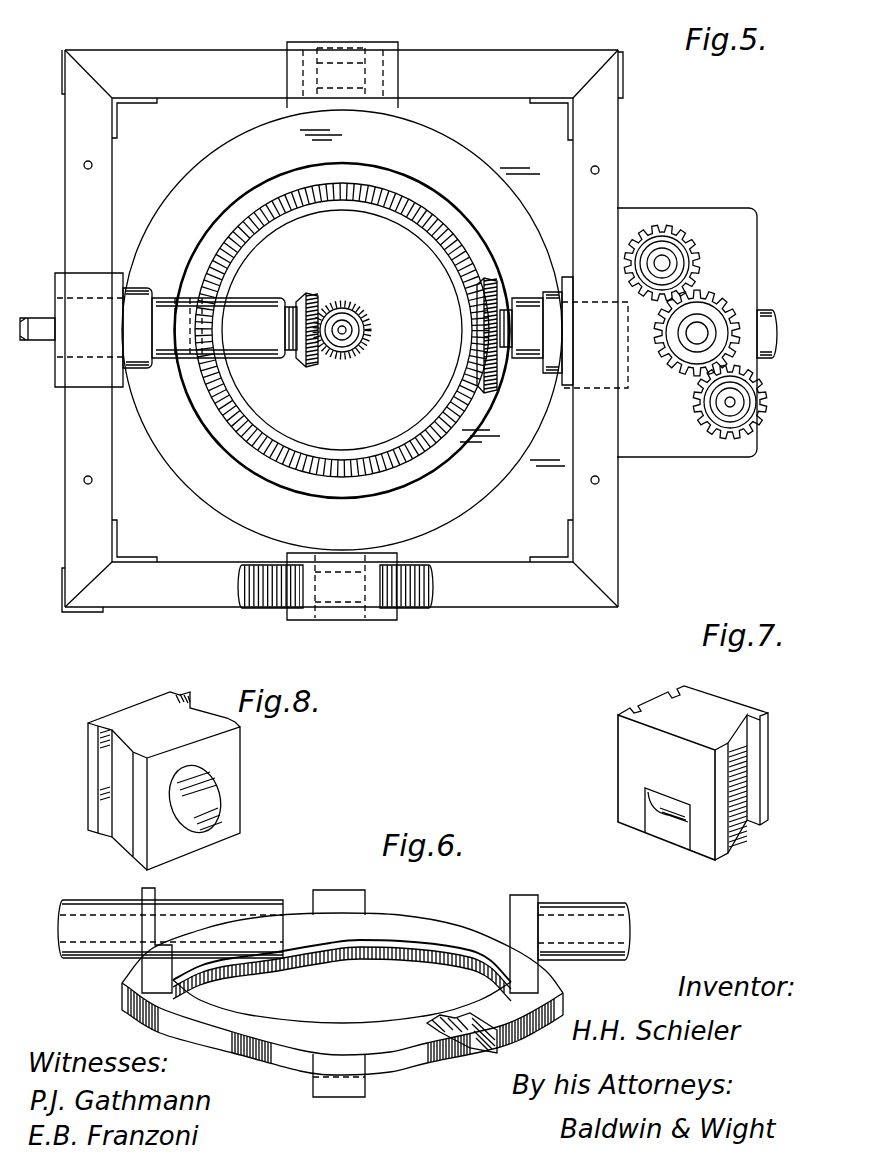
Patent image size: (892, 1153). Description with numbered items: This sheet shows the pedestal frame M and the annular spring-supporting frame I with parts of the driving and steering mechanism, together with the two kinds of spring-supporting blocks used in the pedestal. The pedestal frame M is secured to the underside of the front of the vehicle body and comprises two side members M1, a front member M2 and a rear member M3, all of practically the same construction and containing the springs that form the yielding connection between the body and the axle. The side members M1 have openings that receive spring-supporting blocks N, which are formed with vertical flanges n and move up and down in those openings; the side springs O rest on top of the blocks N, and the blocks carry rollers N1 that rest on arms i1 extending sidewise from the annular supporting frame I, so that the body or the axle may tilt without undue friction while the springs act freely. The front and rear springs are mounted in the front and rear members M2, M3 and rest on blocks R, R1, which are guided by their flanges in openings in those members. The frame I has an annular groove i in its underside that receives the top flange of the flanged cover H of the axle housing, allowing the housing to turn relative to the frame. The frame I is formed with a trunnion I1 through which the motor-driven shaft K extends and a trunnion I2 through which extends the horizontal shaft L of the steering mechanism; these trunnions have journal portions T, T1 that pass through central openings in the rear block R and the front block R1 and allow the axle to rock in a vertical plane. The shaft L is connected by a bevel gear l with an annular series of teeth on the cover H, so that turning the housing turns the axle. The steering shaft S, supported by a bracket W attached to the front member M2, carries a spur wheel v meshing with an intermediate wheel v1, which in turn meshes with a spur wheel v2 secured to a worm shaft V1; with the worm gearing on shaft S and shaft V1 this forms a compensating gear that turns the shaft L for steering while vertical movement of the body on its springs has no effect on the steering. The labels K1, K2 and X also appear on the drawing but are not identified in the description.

In FIG. 5, the pedestal frame M is at (341, 328).
In FIG. 5, the side members of the pedestal frame M1 is at (480, 601).
In FIG. 5, the front member of the pedestal frame M2 is at (595, 328).
In FIG. 5, the rear member of the pedestal frame M3 is at (88, 328).
In FIG. 5, the annular supporting frame I is at (240, 503).
In FIG. 6, the annular supporting frame I is at (432, 928).
In FIG. 5, the arms i1 is at (388, 206).
In FIG. 6, the arms i1 is at (322, 905).
In FIG. 5, the flanged cover H is at (342, 330).
In FIG. 5, the motor-driven shaft K is at (40, 320).
In FIG. 5, the bevel gear on shaft K1 is at (322, 278).
In FIG. 5, the central pinion K2 is at (352, 322).
In FIG. 5, the center axis X is at (352, 360).
In FIG. 5, the bevel gear l is at (476, 320).
In FIG. 5, the trunnion I1 is at (224, 328).
In FIG. 6, the trunnion I1 is at (205, 905).
In FIG. 5, the trunnion I2 is at (533, 358).
In FIG. 6, the trunnion I2 is at (514, 895).
In FIG. 5, the rear journal T is at (84, 298).
In FIG. 6, the rear journal T is at (72, 902).
In FIG. 5, the front journal T1 is at (592, 302).
In FIG. 6, the front journal T1 is at (622, 937).
In FIG. 5, the rear block R is at (567, 390).
In FIG. 8, the rear block R is at (122, 703).
In FIG. 5, the front block R1 is at (58, 384).
In FIG. 5, the bracket W is at (730, 244).
In FIG. 5, the steering shaft S is at (661, 255).
In FIG. 5, the spur wheel v is at (678, 236).
In FIG. 5, the intermediate wheel v1 is at (703, 310).
In FIG. 5, the spur wheel v2 is at (700, 414).
In FIG. 5, the worm shaft V1 is at (729, 406).
In FIG. 5, the horizontal shaft of the steering mechanism L is at (776, 336).
In FIG. 5, the spring-supporting block N is at (330, 31).
In FIG. 7, the spring-supporting block N is at (660, 684).
In FIG. 5, the rollers N1 is at (372, 622).
In FIG. 7, the rollers N1 is at (678, 808).
In FIG. 7, the vertical flanges n is at (630, 709).
In FIG. 5, the side springs O is at (410, 592).
In FIG. 6, the annular groove i is at (470, 1030).